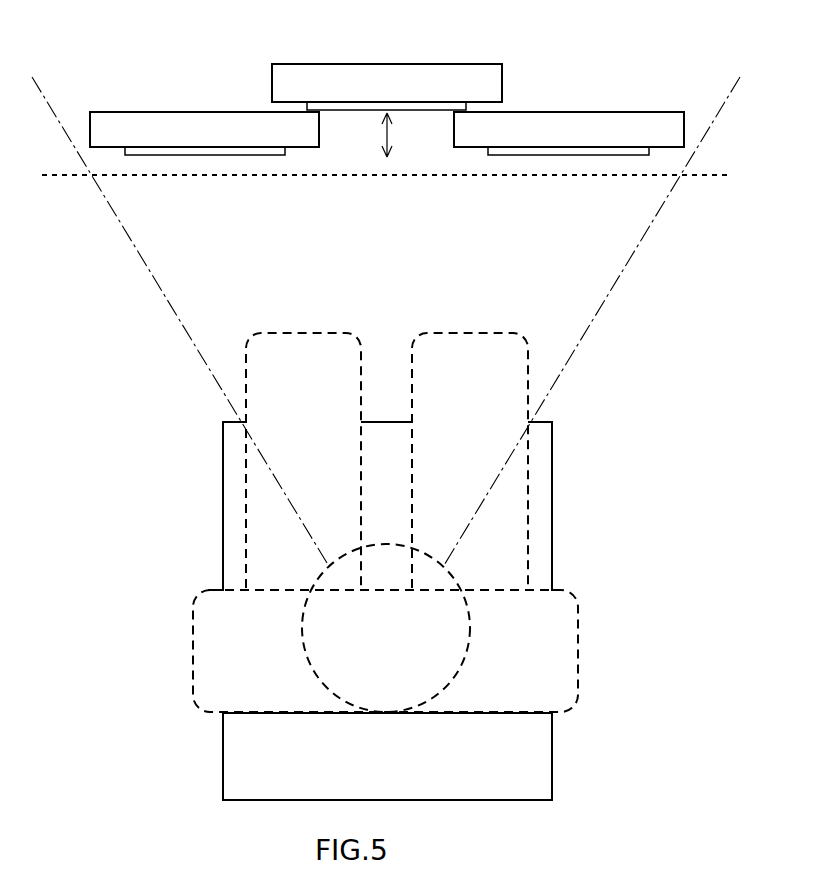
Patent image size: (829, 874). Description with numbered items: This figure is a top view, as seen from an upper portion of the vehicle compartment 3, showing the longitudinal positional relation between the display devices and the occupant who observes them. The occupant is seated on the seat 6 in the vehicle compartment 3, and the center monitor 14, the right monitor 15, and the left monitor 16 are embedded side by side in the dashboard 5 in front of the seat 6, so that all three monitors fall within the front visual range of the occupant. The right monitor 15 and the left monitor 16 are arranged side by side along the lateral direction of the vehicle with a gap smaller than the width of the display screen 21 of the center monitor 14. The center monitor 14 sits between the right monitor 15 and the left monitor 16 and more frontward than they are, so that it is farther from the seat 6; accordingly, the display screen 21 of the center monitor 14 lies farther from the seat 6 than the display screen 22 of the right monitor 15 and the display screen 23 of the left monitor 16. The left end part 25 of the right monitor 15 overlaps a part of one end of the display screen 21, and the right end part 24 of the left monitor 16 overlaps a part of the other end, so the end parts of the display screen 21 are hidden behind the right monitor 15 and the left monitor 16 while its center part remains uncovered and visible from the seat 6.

The vehicle compartment 3 is at (112, 365).
The dashboard 5 is at (260, 175).
The seat 6 is at (548, 520).
The center monitor 14 is at (392, 63).
The right monitor 15 is at (583, 110).
The left monitor 16 is at (197, 112).
The display screen of the center monitor 21 is at (413, 112).
The display screen of the right monitor 22 is at (590, 157).
The display screen of the left monitor 23 is at (180, 160).
The right end part 24 is at (307, 147).
The left end part 25 is at (468, 148).